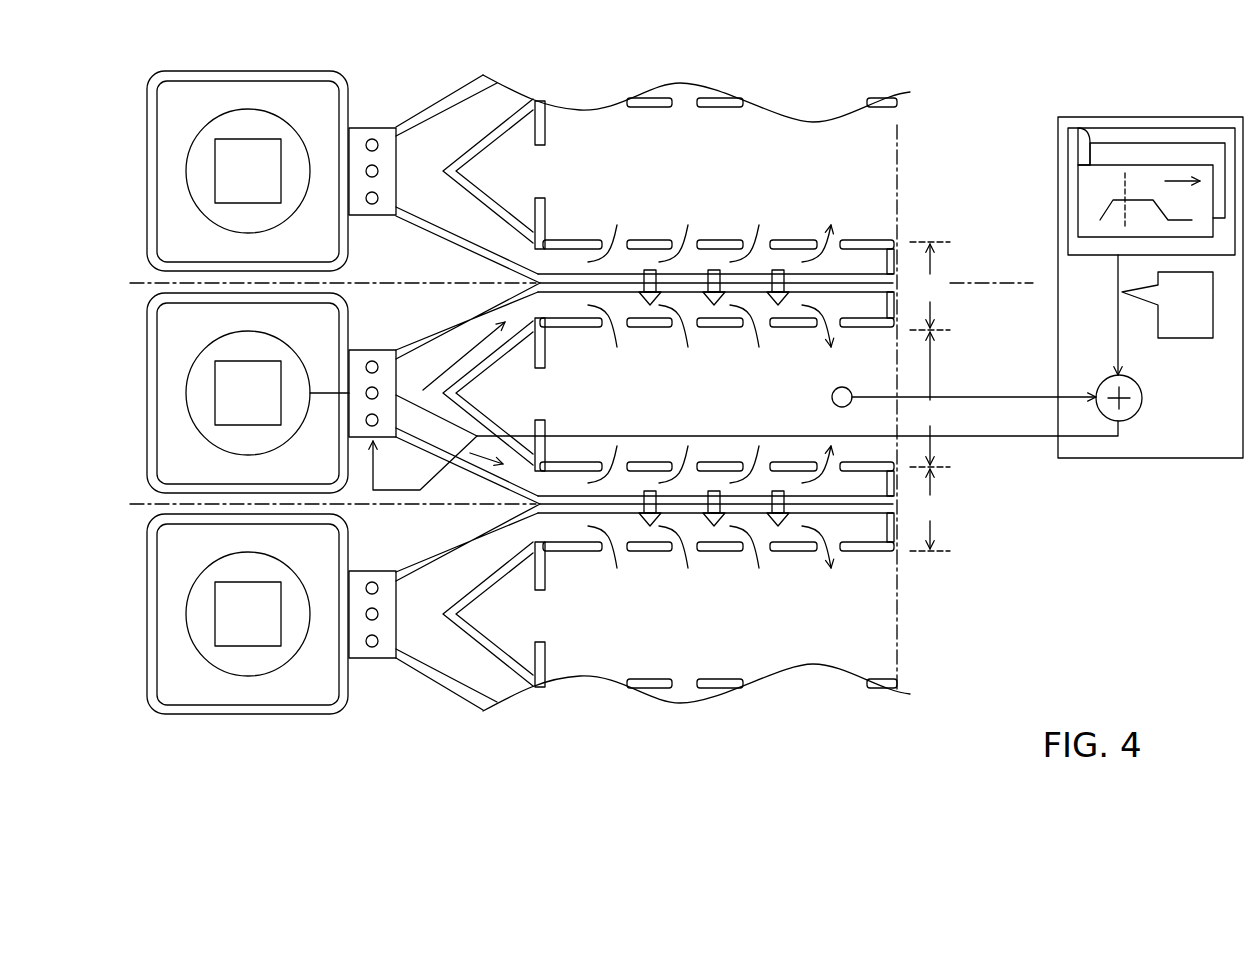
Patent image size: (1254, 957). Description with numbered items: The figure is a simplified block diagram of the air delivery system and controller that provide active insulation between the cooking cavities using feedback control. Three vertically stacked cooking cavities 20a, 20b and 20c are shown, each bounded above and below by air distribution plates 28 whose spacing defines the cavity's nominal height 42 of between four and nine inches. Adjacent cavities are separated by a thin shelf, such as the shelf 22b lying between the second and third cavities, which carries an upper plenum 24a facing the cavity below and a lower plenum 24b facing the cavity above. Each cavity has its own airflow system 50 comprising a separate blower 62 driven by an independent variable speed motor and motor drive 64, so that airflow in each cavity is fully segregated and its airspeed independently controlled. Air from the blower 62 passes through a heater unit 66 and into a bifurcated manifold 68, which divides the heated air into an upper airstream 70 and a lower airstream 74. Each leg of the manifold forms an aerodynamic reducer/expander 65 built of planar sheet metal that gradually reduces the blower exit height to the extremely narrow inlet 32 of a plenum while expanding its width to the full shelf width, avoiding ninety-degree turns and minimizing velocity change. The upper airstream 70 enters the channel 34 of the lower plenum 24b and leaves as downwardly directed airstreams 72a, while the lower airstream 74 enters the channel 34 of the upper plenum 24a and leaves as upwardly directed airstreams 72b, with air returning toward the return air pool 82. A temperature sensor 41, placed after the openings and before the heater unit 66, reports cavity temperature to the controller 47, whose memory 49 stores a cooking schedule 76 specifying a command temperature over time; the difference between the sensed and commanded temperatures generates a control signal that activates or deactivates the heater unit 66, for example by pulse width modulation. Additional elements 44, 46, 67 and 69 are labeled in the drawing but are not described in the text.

The cooking cavity 20a is at (760, 173).
The cooking cavity 20b is at (708, 391).
The cooking cavity 20c is at (700, 638).
The shelf 22b is at (1022, 581).
The upper plenum 24a is at (895, 252).
The lower plenum 24b is at (873, 330).
The air distribution plate 28 is at (848, 240).
The inlet 32 is at (557, 259).
The channel 34 is at (638, 246).
The temperature sensor 41 is at (832, 397).
The nominal height 42 is at (714, 411).
The chamber spacing 44 is at (930, 396).
The flow direction arrow 46 is at (714, 268).
The controller 47 is at (1139, 254).
The memory 49 is at (1163, 128).
The airflow system 50 is at (615, 389).
The blower 62 is at (293, 124).
The variable speed motor and motor drive 64 is at (235, 184).
The aerodynamic reducer/expander 65 is at (423, 97).
The heater unit 66 is at (375, 216).
The nozzle 67 is at (529, 393).
The bifurcated manifold 68 is at (527, 148).
The baffle 69 is at (546, 243).
The upper airstream 70 is at (460, 350).
The downwardly directed airstreams 72a is at (617, 330).
The upwardly directed airstreams 72b is at (626, 463).
The lower airstream 74 is at (476, 452).
The cooking schedule 76 is at (1075, 160).
The return air pool 82 is at (625, 140).